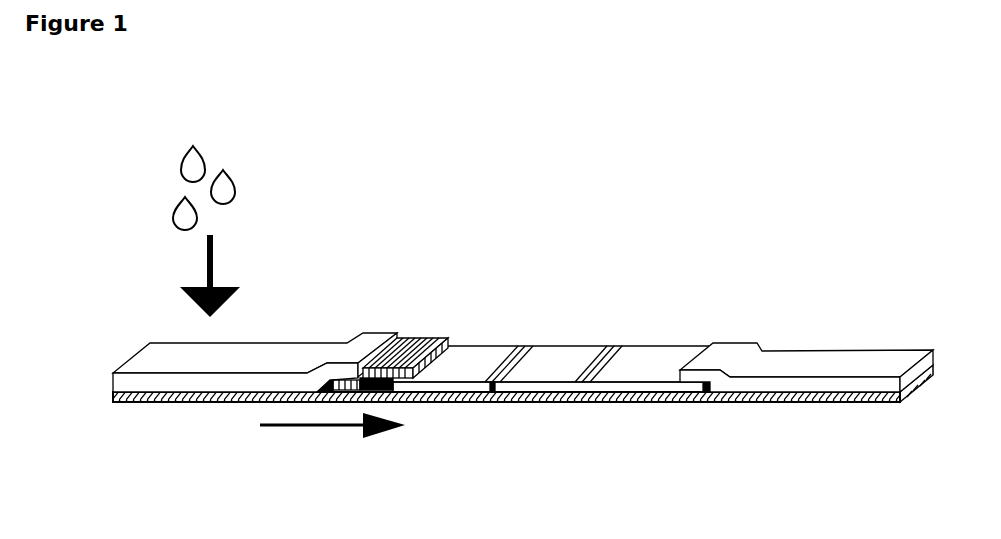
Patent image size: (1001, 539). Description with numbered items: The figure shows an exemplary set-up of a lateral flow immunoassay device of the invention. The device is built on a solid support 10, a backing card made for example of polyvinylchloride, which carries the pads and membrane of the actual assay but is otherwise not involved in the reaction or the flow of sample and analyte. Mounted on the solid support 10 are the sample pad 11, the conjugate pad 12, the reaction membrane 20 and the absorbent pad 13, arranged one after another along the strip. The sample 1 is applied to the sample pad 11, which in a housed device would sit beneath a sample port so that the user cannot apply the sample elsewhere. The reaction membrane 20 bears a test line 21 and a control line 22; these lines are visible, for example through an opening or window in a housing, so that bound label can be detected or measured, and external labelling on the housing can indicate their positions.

The sample 1 is at (221, 179).
The solid support 10 is at (152, 398).
The sample pad 11 is at (128, 337).
The conjugate pad 12 is at (421, 338).
The absorbent pad 13 is at (838, 348).
The reaction membrane 20 is at (637, 373).
The test line 21 is at (493, 404).
The control line 22 is at (617, 330).